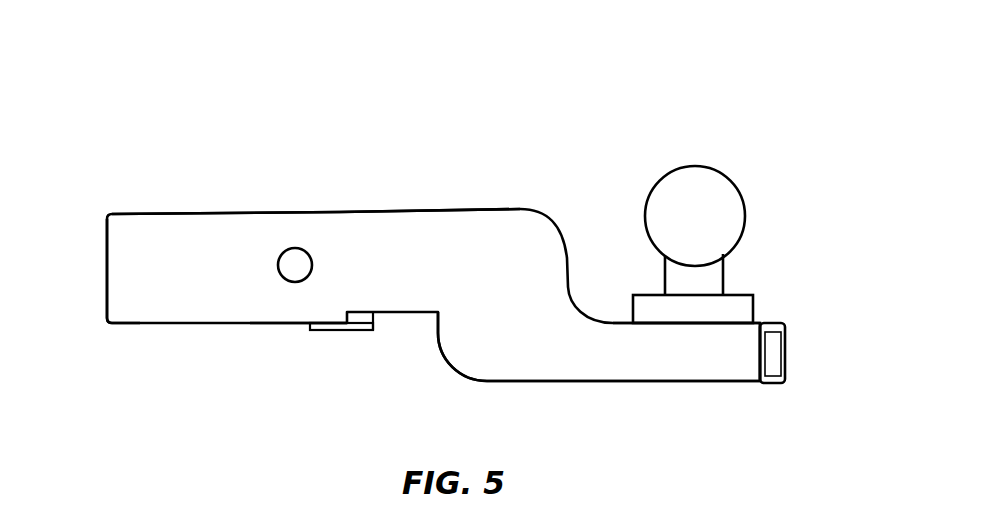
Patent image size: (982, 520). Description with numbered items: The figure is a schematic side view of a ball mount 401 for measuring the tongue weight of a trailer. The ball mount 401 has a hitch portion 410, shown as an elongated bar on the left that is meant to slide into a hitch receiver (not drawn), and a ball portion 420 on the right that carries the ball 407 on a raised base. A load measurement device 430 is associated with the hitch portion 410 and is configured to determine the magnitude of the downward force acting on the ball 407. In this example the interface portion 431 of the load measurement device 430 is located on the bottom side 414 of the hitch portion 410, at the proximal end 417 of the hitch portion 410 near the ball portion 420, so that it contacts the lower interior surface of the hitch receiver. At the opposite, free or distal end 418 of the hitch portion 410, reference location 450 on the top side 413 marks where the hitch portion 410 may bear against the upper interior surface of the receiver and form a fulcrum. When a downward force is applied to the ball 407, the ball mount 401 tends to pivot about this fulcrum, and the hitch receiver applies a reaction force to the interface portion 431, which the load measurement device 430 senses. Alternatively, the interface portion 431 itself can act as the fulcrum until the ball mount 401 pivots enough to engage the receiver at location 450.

The ball mount 401 is at (580, 57).
The ball 407 is at (745, 212).
The hitch portion 410 is at (188, 300).
The top side 413 is at (306, 185).
The bottom side 414 is at (277, 348).
The proximal end 417 is at (410, 351).
The distal end 418 is at (108, 349).
The ball portion 420 is at (687, 365).
The load measurement device 430 is at (353, 380).
The interface portion 431 is at (330, 332).
The fulcrum location 450 is at (110, 213).